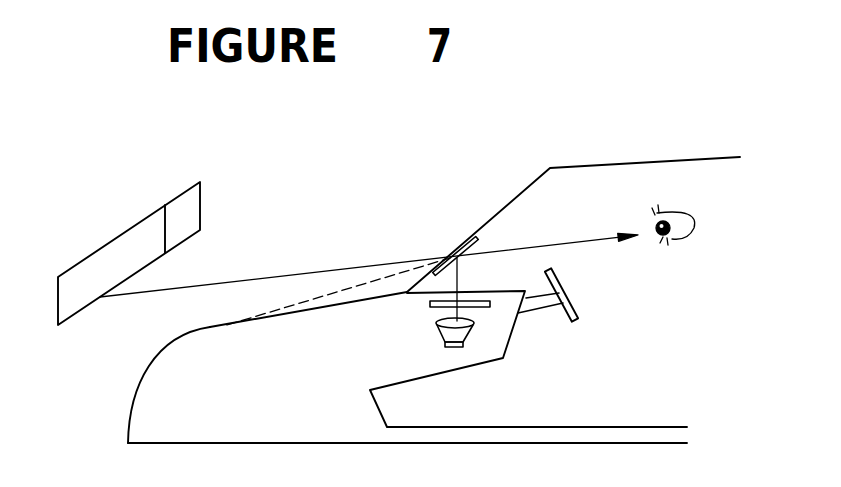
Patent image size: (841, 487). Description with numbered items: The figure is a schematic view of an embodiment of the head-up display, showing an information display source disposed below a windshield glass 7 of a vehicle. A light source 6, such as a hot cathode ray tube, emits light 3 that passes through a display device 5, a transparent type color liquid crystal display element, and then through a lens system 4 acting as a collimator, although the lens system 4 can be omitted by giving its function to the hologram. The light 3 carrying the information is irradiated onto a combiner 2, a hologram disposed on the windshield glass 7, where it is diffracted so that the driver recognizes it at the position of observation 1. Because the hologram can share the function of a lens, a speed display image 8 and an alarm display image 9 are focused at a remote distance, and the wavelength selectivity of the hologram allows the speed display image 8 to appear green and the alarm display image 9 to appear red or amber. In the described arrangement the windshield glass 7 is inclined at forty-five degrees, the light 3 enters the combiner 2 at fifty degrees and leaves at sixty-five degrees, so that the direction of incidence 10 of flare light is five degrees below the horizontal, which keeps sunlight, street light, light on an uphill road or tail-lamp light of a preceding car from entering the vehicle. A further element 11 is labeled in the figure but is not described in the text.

The position of observation 1 is at (677, 242).
The combiner 2 is at (460, 240).
The light 3 is at (580, 318).
The lens system 4 is at (437, 327).
The display device 5 is at (430, 304).
The light source 6 is at (457, 347).
The windshield glass 7 is at (507, 205).
The speed display image 8 is at (97, 250).
The alarm display image 9 is at (187, 192).
The direction of incidence of flare light 10 is at (332, 290).
The dashboard 11 is at (218, 323).